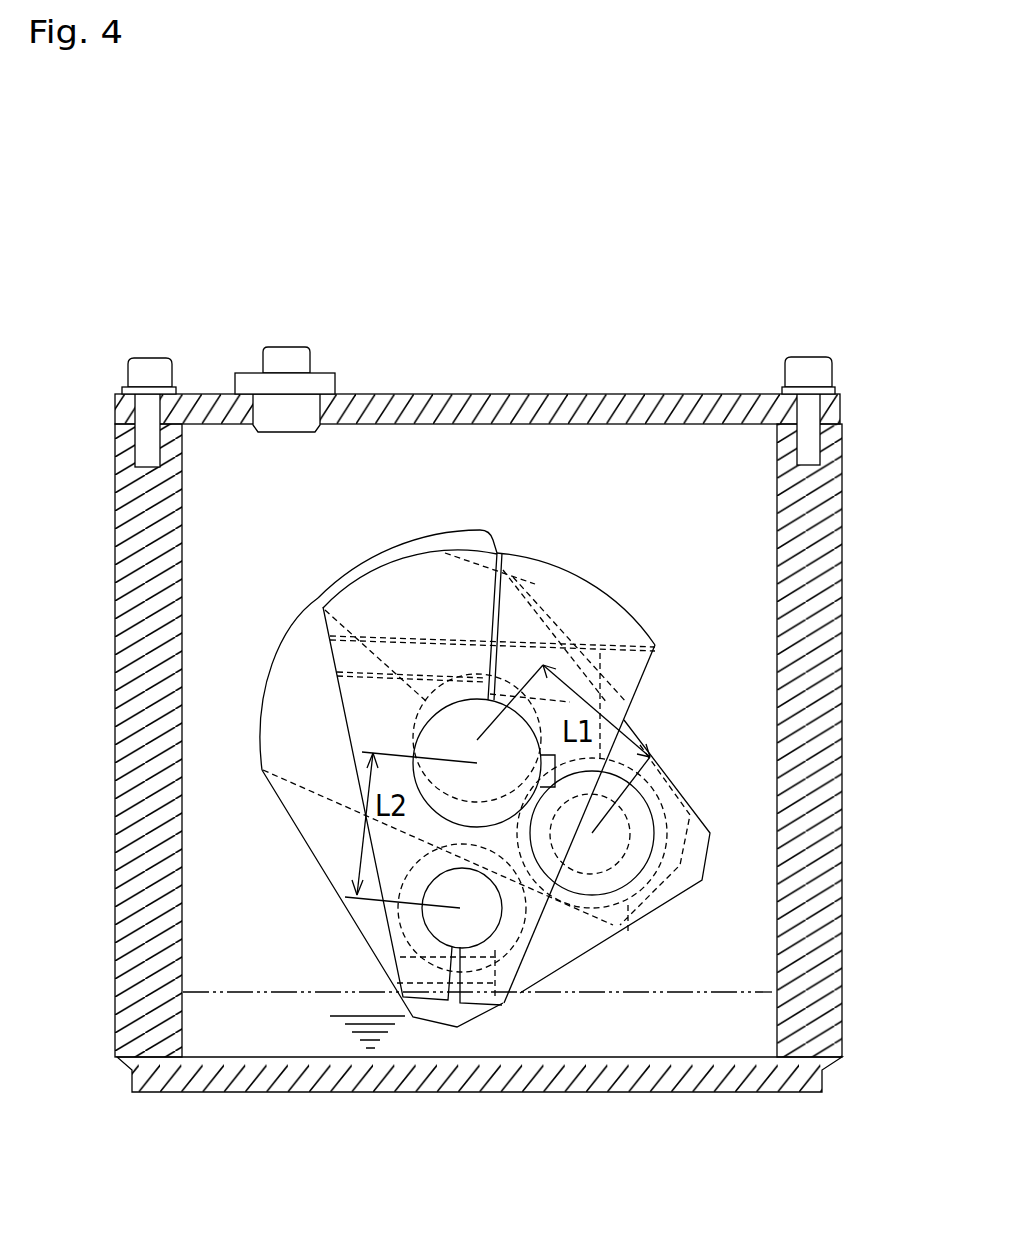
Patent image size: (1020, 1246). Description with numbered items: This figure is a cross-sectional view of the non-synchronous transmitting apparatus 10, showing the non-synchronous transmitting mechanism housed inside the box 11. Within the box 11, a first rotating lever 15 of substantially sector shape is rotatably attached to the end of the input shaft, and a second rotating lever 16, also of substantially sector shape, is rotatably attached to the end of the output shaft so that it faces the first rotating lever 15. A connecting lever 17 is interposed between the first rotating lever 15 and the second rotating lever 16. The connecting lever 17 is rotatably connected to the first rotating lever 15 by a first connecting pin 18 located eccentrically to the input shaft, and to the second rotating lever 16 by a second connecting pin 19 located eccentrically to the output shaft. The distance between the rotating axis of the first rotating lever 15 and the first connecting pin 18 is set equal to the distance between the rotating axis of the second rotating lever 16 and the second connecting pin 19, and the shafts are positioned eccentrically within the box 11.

The non-synchronous transmitting apparatus 10 is at (535, 370).
The box 11 is at (820, 593).
The first rotating lever 15 is at (660, 790).
The second rotating lever 16 is at (598, 587).
The connecting lever 17 is at (292, 693).
The first connecting pin 18 is at (615, 830).
The second connecting pin 19 is at (477, 922).